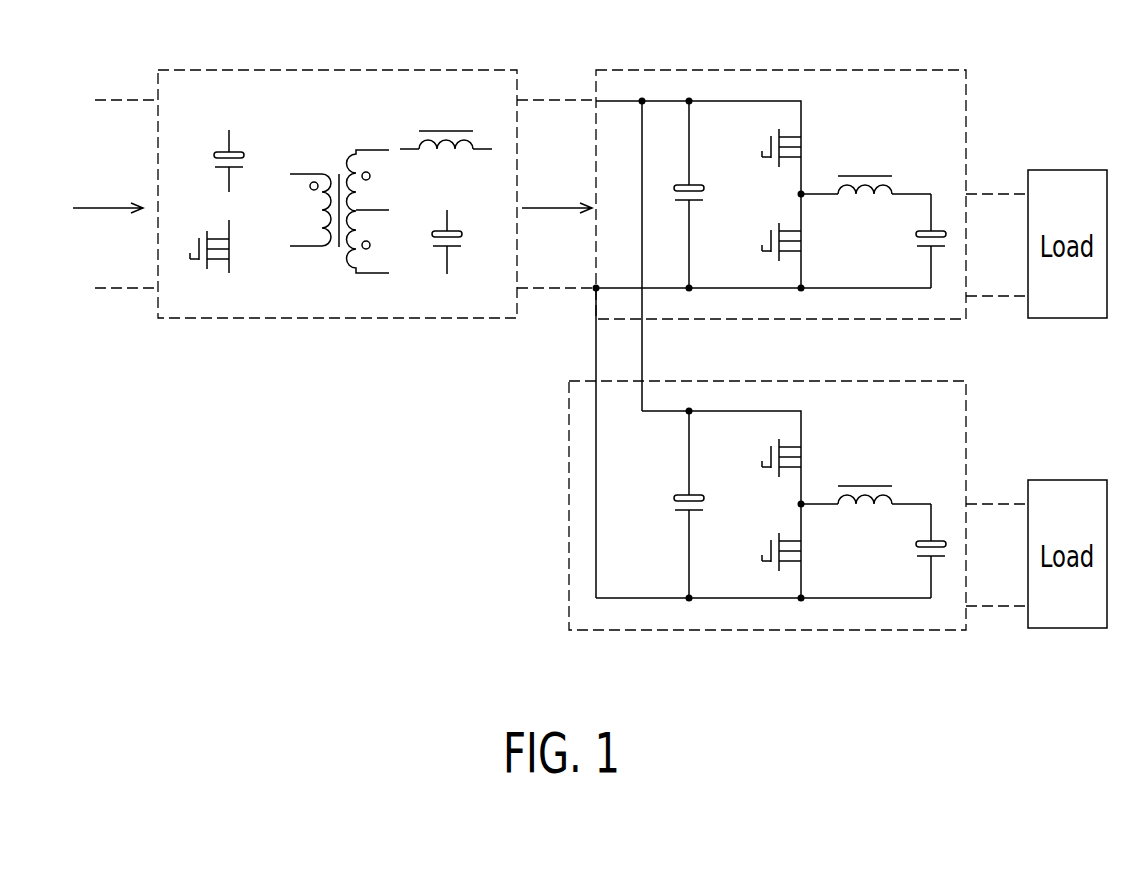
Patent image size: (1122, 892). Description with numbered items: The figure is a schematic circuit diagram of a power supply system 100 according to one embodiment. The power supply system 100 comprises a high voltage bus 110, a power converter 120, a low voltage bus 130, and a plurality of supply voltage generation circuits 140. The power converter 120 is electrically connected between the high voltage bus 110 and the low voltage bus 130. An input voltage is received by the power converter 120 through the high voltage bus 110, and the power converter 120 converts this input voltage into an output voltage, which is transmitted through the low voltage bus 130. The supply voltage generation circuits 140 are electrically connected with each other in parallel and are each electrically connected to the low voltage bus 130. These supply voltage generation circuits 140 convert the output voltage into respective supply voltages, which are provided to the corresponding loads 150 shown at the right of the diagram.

The power supply system 100 is at (349, 560).
The high voltage bus 110 is at (127, 100).
The power converter 120 is at (307, 70).
The low voltage bus 130 is at (557, 100).
The supply voltage generation circuit 140 is at (777, 70).
The load 150 is at (1068, 170).